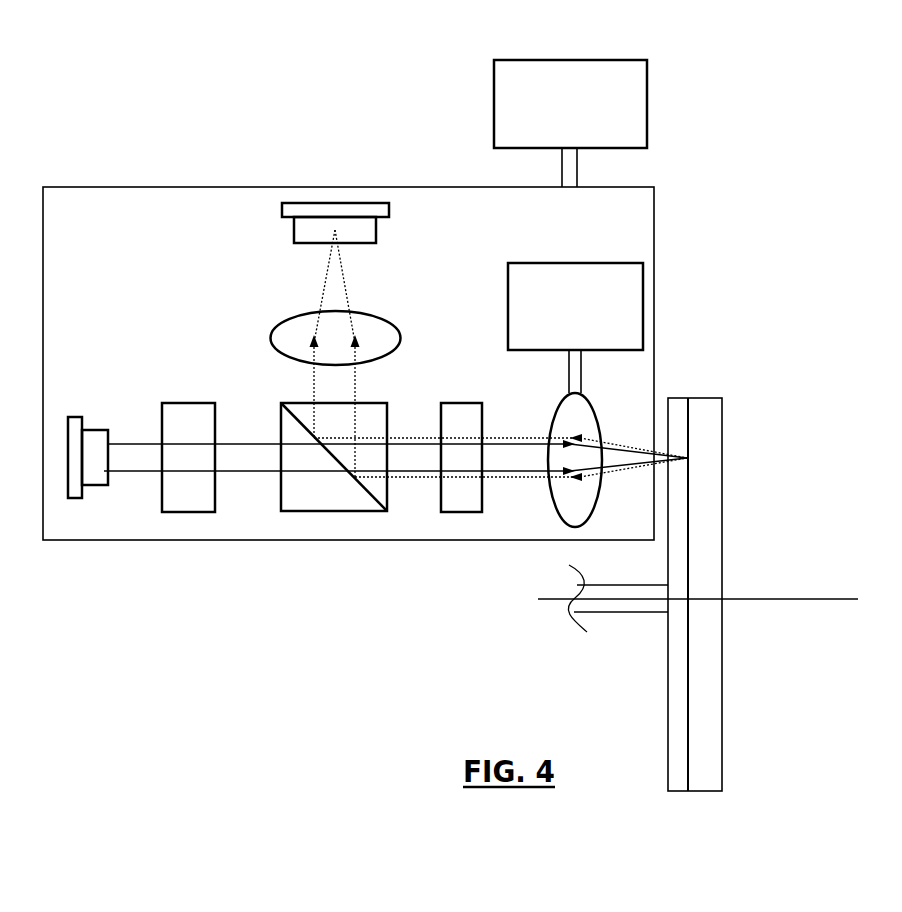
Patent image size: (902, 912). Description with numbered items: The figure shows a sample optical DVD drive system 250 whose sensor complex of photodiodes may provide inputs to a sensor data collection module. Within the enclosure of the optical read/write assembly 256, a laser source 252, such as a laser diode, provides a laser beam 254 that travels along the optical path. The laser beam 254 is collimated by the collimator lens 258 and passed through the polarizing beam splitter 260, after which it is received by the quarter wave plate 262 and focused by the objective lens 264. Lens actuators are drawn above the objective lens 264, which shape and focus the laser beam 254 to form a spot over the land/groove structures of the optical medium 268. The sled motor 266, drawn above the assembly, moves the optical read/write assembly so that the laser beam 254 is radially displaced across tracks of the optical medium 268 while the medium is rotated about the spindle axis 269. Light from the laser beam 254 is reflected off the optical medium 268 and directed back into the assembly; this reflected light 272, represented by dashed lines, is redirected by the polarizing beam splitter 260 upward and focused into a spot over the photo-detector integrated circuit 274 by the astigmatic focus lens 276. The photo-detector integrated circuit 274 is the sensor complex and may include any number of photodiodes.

The optical DVD drive system 250 is at (670, 166).
The laser source 252 is at (73, 417).
The laser beam 254 is at (117, 440).
The optical pickup housing 256 is at (110, 187).
The collimator lens 258 is at (177, 403).
The polarizing beam splitter 260 is at (373, 403).
The quarter wave plate 262 is at (441, 403).
The objective lens 264 is at (593, 407).
The sled motor 266 is at (572, 60).
The optical medium 268 is at (690, 398).
The spindle axis 269 is at (813, 599).
The reflected light 272 is at (490, 437).
The photo-detector integrated circuit 274 is at (385, 218).
The astigmatic focus lens 276 is at (382, 315).